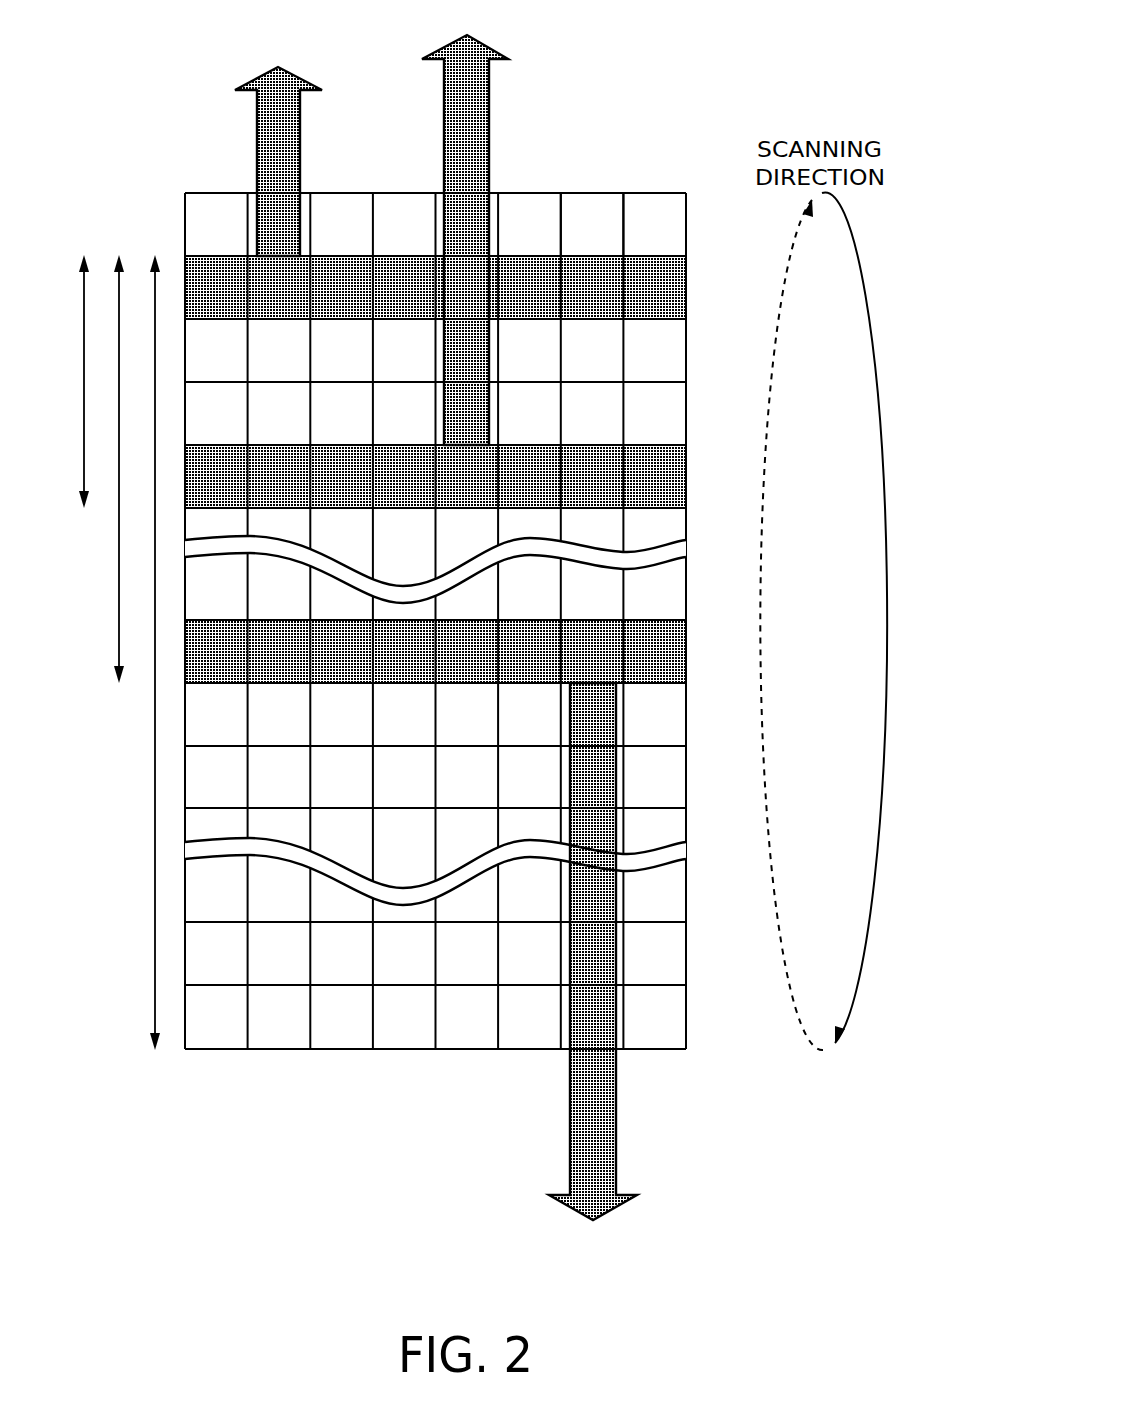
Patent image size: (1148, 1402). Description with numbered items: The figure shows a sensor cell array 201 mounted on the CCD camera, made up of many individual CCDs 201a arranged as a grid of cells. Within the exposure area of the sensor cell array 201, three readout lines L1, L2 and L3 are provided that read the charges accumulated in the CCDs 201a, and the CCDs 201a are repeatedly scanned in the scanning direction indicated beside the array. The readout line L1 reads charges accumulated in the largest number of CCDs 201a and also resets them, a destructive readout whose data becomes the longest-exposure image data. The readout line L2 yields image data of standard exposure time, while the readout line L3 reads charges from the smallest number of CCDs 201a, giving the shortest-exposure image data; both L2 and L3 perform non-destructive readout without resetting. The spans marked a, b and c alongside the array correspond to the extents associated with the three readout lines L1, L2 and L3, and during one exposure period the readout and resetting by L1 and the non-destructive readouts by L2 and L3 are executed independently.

The sensor cell array 201 is at (668, 138).
The CCD 201a is at (593, 193).
The readout line L1 is at (687, 284).
The readout line L2 is at (687, 474).
The readout line L3 is at (687, 645).
The scan range a is at (84, 365).
The scan range b is at (119, 453).
The scan range c is at (155, 636).